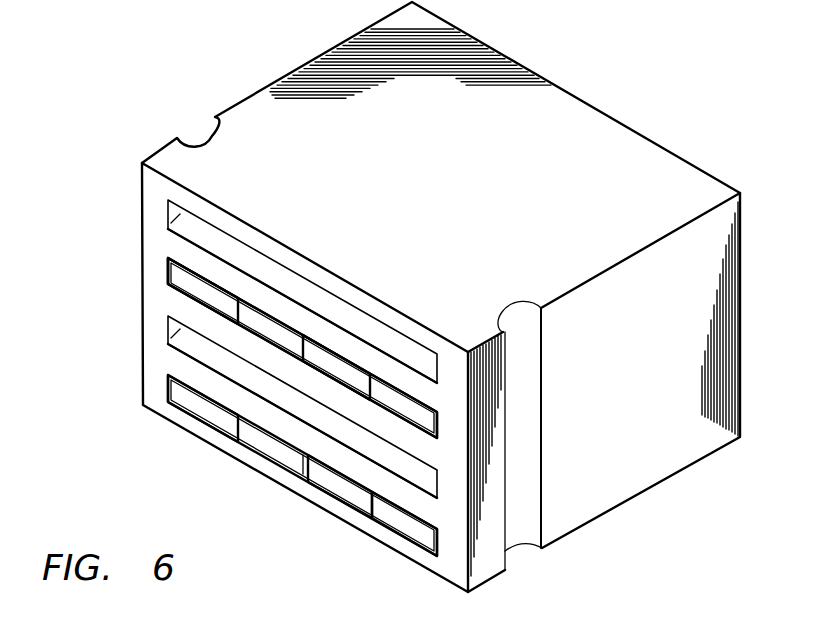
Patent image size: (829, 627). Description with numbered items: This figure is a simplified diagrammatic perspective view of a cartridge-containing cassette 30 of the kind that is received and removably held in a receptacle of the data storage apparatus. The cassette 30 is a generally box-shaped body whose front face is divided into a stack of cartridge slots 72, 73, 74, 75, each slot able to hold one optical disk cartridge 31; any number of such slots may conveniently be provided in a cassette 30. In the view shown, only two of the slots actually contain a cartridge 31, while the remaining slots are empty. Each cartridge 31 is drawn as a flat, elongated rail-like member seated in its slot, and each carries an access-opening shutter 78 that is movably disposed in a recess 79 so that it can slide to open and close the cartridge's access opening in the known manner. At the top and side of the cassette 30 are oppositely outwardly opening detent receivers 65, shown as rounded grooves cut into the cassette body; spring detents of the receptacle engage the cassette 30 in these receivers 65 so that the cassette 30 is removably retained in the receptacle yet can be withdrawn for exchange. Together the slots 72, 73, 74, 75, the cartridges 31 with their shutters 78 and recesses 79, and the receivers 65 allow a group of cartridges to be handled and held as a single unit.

The cartridge-containing cassette 30 is at (578, 108).
The detent receiver 65 is at (204, 140).
The cartridge slot 72 is at (168, 212).
The cartridge slot 73 is at (166, 264).
The optical disk cartridge 31 is at (170, 278).
The shutter 78 is at (270, 326).
The recess 79 is at (400, 394).
The cartridge slot 74 is at (326, 424).
The cartridge slot 75 is at (388, 522).